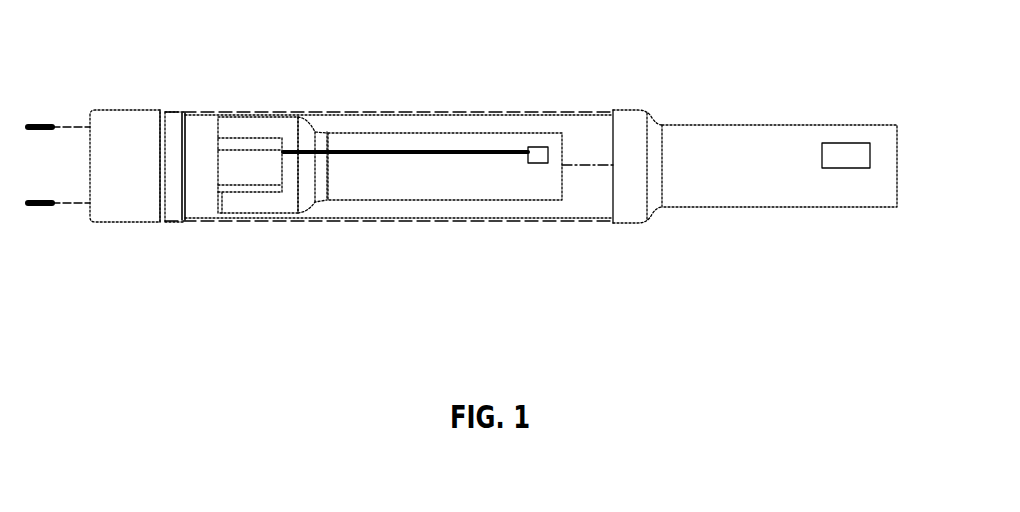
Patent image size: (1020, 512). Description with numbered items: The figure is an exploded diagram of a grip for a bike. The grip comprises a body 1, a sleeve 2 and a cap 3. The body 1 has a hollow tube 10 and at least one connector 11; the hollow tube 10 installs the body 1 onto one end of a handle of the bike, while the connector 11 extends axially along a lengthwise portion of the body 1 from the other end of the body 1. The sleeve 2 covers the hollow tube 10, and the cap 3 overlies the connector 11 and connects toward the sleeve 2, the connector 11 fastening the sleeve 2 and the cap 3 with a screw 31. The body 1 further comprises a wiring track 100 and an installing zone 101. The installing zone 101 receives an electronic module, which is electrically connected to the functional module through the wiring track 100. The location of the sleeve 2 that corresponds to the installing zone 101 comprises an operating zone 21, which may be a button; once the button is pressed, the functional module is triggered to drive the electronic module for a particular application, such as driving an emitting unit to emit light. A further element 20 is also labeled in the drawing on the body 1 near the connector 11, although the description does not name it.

The body 1 is at (432, 68).
The hollow tube 10 is at (480, 130).
The wiring track 100 is at (410, 155).
The installing zone 101 is at (533, 155).
The connector 11 is at (245, 122).
The sleeve 2 is at (743, 75).
The inner sleeve 20 is at (180, 175).
The operating zone 21 is at (857, 155).
The cap 3 is at (145, 73).
The screw 31 is at (43, 120).